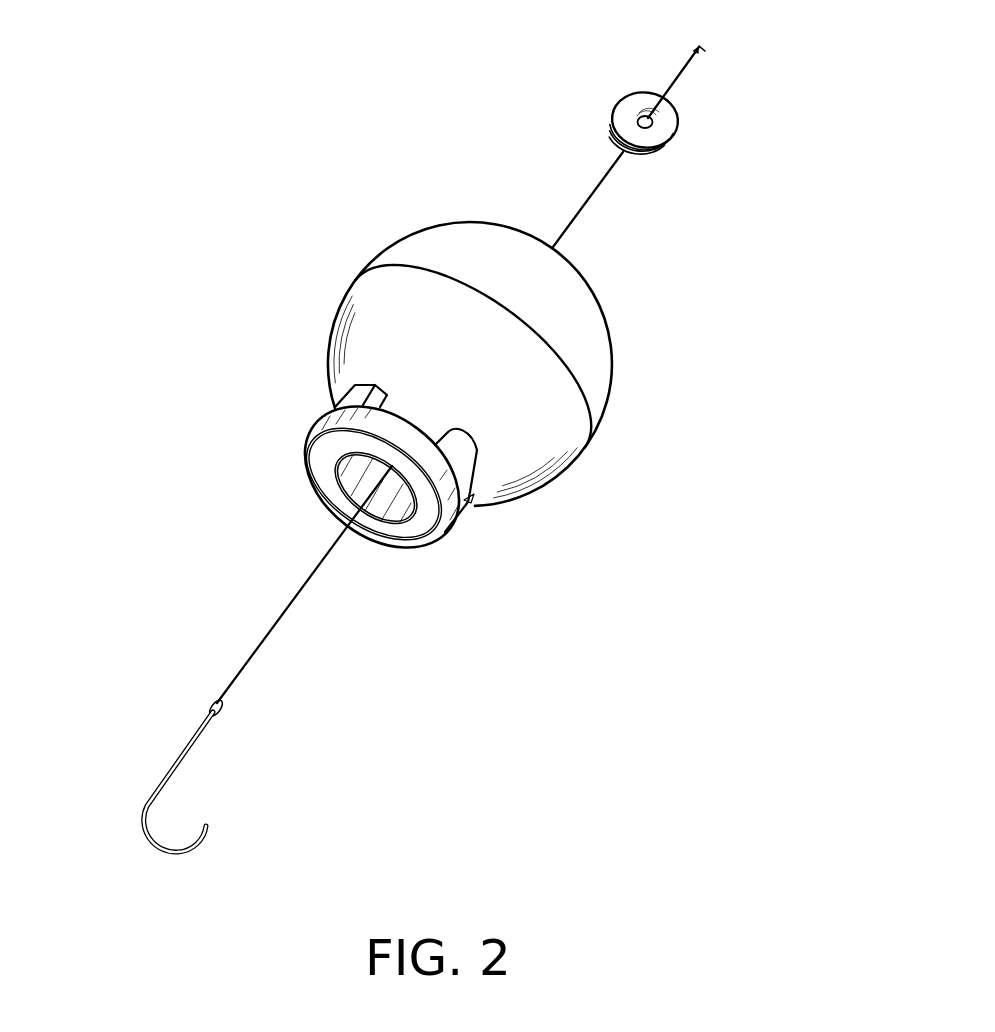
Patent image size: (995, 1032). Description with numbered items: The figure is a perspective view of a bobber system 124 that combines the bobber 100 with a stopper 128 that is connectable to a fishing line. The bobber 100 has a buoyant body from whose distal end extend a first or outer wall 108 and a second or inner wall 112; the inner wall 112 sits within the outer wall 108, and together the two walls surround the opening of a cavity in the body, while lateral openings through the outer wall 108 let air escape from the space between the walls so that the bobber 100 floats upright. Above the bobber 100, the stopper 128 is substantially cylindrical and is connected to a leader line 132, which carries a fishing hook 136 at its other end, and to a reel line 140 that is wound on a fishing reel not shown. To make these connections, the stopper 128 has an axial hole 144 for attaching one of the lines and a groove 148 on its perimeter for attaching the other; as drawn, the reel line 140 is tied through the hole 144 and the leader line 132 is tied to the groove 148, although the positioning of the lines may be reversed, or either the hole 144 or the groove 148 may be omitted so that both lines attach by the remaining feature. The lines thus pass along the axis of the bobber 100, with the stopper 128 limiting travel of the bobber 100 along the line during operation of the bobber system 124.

The bobber 100 is at (296, 302).
The first or outer wall 108 is at (443, 537).
The second or inner wall 112 is at (332, 492).
The bobber system 124 is at (352, 152).
The stopper 128 is at (632, 93).
The leader line 132 is at (580, 213).
The fishing hook 136 is at (185, 757).
The reel line 140 is at (685, 70).
The axial hole 144 is at (637, 122).
The groove 148 is at (668, 147).